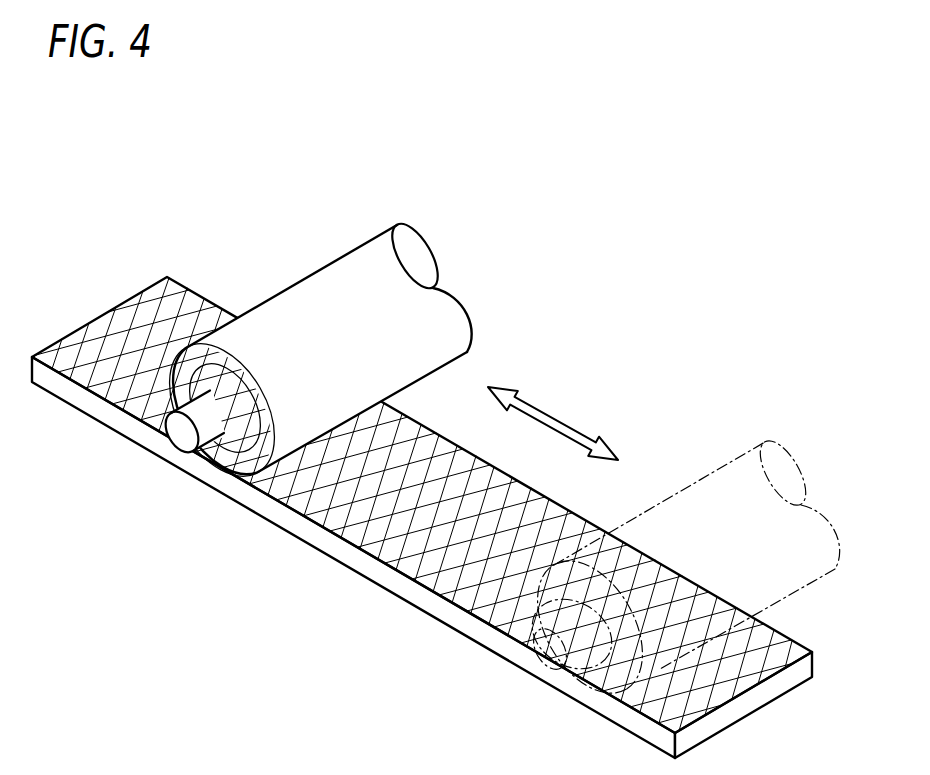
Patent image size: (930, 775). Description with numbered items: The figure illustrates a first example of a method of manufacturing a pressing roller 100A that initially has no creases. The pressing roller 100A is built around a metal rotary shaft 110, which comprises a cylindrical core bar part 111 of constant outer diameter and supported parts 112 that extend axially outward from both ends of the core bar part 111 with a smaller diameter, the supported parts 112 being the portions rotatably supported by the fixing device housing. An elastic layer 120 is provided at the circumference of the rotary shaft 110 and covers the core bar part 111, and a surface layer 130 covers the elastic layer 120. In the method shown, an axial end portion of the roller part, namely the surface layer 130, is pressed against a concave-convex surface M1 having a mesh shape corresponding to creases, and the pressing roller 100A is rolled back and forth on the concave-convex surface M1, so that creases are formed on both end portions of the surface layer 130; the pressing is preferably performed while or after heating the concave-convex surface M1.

The pressing roller 100A is at (249, 346).
The rotary shaft 110 is at (151, 438).
The core bar part 111 is at (170, 384).
The supported parts 112 is at (182, 440).
The elastic layer 120 is at (238, 462).
The surface layer 130 is at (311, 293).
The concave-convex surface M1 is at (182, 307).